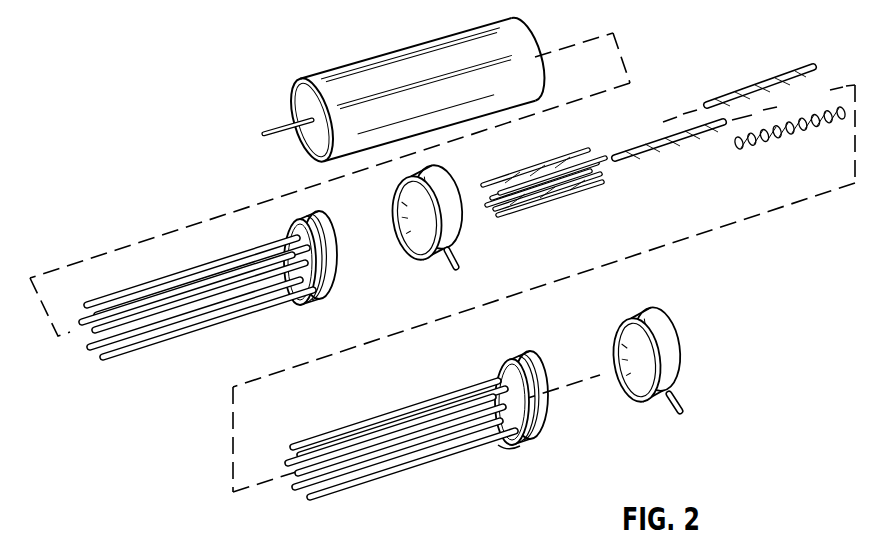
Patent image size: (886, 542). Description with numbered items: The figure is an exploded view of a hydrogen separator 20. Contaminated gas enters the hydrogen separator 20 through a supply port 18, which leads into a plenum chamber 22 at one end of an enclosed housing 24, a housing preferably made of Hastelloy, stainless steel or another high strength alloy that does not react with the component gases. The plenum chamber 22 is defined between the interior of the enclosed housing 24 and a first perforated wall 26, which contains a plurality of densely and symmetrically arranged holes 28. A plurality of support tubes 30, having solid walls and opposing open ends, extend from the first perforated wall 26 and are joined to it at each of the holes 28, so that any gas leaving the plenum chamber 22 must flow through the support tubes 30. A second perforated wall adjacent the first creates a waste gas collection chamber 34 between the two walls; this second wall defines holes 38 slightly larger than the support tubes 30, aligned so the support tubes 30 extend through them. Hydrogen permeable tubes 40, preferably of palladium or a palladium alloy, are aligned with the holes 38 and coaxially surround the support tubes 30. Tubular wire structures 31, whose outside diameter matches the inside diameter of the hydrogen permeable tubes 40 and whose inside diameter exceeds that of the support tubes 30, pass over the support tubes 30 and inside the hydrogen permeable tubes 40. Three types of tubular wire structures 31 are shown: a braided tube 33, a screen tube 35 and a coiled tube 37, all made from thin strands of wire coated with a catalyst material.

The supply port 18 is at (684, 399).
The hydrogen separator 20 is at (155, 111).
The plenum chamber 22 is at (624, 382).
The enclosed housing 24 is at (390, 56).
The first perforated wall 26 is at (518, 447).
The holes 28 is at (493, 376).
The support tubes 30 is at (390, 467).
The tubular wire structures 31 is at (528, 155).
The braided tube 33 is at (813, 67).
The waste gas collection chamber 34 is at (416, 250).
The screen tube 35 is at (642, 160).
The coiled tube 37 is at (795, 134).
The holes 38 is at (288, 230).
The hydrogen permeable tubes 40 is at (220, 303).